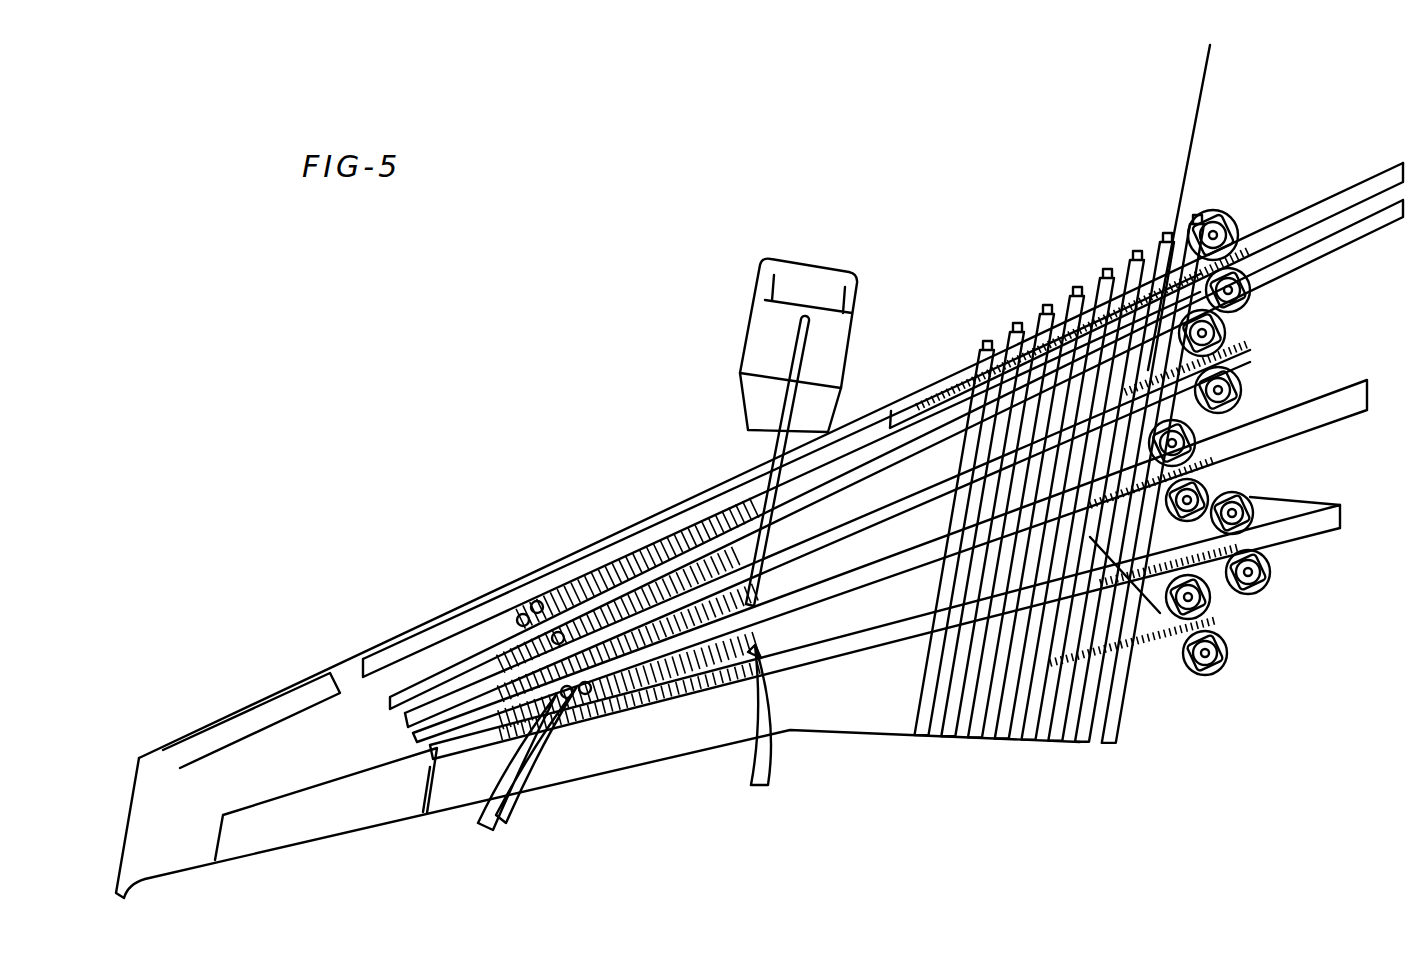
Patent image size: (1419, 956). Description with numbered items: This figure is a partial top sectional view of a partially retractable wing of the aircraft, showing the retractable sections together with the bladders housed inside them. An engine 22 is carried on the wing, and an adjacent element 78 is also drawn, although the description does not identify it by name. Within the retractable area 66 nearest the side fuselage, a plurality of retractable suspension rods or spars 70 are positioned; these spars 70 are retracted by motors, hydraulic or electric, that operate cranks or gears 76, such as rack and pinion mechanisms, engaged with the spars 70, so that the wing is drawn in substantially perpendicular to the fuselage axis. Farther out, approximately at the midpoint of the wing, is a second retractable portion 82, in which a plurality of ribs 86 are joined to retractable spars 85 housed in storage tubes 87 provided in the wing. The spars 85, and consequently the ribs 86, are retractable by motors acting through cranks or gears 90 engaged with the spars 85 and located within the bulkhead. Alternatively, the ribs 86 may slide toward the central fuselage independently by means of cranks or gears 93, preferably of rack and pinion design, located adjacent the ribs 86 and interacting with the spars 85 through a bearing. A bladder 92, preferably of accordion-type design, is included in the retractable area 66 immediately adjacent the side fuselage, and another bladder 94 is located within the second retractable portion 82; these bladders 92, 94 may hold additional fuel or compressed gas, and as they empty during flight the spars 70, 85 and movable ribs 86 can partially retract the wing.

The engine 22 is at (843, 338).
The retractable area 66 is at (846, 712).
The retractable suspension rod or spar 70 is at (1037, 333).
The crank or gear 76 is at (1246, 470).
The needle 78 is at (745, 437).
The second retractable portion 82 is at (456, 625).
The retractable spar 85 is at (894, 412).
The rib 86 is at (556, 587).
The storage tube 87 is at (426, 750).
The crank or gear 90 is at (1238, 240).
The bladder 92 is at (1086, 528).
The crank/gear 93 is at (523, 773).
The bladder 94 is at (743, 731).